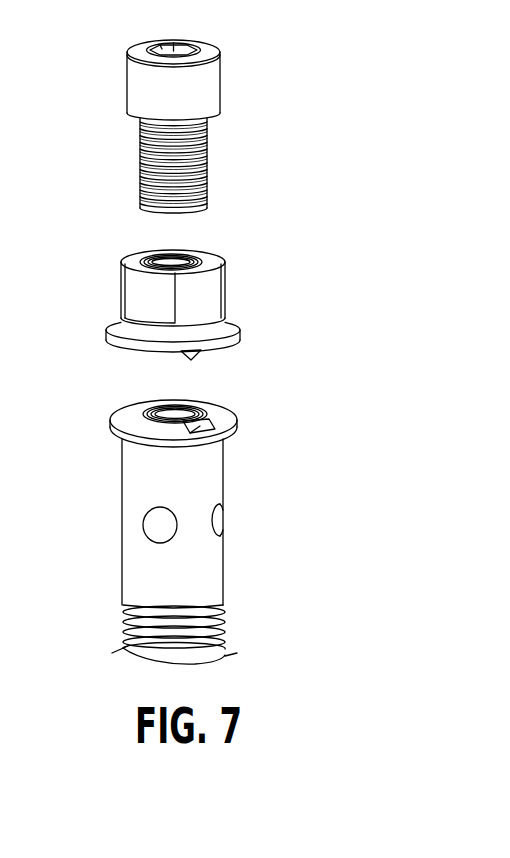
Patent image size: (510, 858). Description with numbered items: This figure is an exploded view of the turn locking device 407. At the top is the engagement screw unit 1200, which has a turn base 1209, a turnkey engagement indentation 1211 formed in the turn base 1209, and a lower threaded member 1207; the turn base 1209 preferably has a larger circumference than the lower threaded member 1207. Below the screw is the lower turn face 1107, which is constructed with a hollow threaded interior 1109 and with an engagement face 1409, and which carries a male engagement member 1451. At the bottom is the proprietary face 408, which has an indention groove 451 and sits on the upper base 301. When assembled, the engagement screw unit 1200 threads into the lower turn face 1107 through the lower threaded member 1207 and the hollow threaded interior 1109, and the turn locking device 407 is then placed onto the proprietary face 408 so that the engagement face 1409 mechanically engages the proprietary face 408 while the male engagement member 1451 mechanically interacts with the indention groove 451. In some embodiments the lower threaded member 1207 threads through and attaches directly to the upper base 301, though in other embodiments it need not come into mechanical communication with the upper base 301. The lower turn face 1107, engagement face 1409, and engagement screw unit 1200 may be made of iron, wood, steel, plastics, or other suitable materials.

The engagement screw unit 1200 is at (189, 114).
The turn base 1209 is at (212, 42).
The turnkey engagement indentation 1211 is at (163, 47).
The lower threaded member 1207 is at (207, 172).
The lower turn face 1107 is at (190, 277).
The hollow threaded interior 1109 is at (153, 258).
The engagement face 1409 is at (213, 345).
The male engagement member 1451 is at (200, 357).
The turn locking device 407 is at (188, 522).
The proprietary face 408 is at (132, 415).
The indention groove 451 is at (213, 433).
The upper base 301 is at (171, 522).